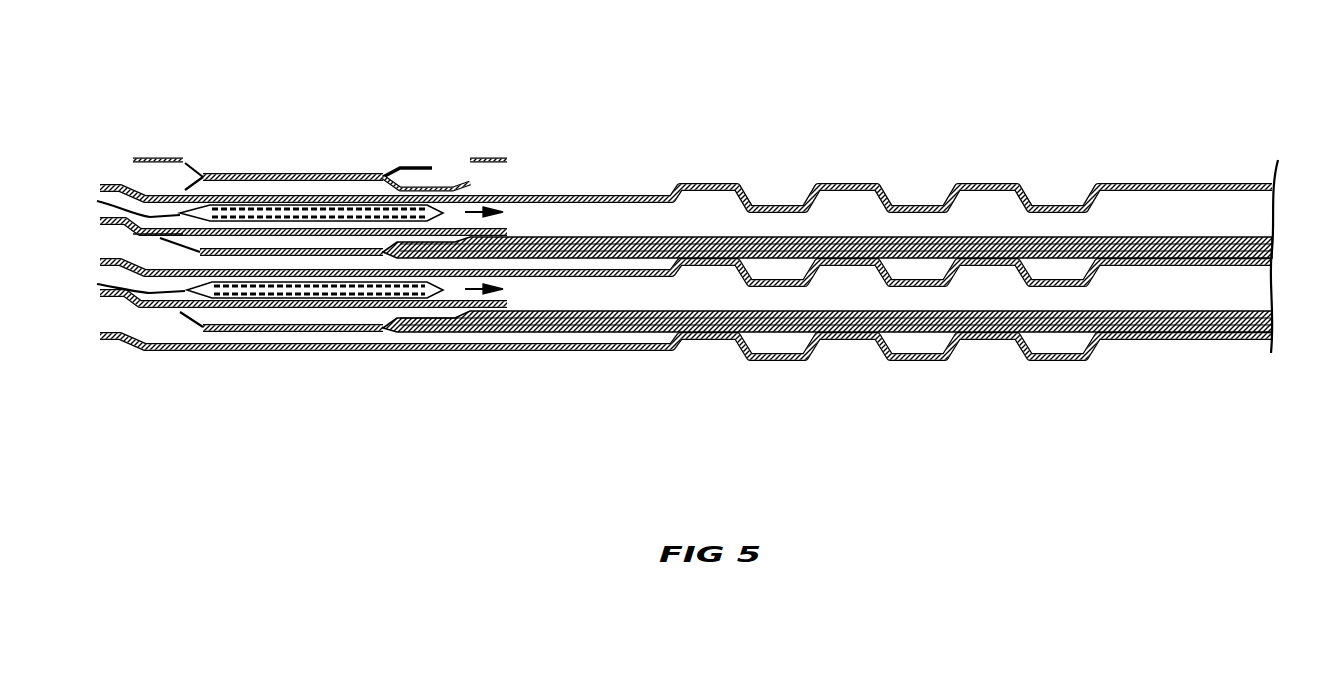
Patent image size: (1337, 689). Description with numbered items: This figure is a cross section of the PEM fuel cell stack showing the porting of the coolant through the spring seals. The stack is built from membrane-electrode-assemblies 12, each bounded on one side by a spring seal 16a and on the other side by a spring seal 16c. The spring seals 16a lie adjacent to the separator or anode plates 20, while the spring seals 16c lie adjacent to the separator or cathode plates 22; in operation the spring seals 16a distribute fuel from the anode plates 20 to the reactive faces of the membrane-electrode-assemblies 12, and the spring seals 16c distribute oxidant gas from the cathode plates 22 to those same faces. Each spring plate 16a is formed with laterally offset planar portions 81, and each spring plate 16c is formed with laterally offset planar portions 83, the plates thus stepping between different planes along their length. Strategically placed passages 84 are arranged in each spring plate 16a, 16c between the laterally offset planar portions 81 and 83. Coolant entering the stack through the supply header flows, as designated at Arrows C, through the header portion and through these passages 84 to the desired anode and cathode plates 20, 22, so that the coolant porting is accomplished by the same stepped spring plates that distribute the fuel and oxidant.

The membrane-electrode-assembly 12 is at (1272, 248).
The spring seal 16a is at (212, 257).
The spring seal 16c is at (278, 258).
The anode plate 20 is at (100, 221).
The cathode plate 22 is at (100, 186).
The laterally offset planar portion 81 is at (163, 217).
The laterally offset planar portion 83 is at (153, 288).
The coolant passage 84 is at (200, 213).
The coolant flow arrows C is at (97, 200).